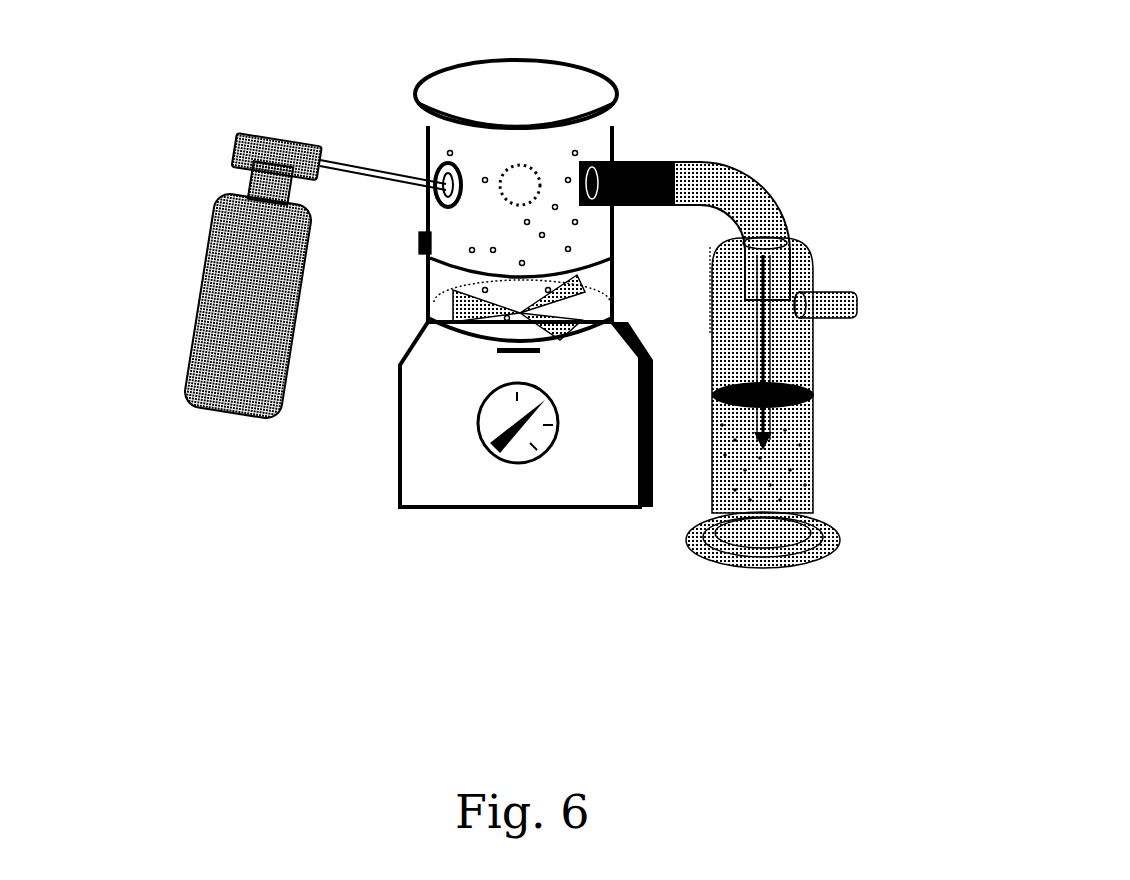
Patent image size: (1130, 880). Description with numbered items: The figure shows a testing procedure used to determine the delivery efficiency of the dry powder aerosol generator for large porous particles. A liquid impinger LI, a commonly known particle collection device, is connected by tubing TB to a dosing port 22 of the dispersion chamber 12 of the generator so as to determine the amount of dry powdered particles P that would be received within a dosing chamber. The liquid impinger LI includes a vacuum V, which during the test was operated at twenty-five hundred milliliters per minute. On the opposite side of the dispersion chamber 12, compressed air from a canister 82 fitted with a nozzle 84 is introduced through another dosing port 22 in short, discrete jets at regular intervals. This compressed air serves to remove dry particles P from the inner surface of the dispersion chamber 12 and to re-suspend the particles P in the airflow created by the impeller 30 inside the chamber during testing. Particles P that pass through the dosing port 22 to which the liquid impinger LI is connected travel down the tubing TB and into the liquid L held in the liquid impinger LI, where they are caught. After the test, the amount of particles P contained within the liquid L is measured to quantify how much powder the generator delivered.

The dispersion chamber 12 is at (613, 128).
The dosing port 22 is at (427, 160).
The impeller 30 is at (455, 322).
The canister 82 is at (200, 262).
The nozzle 84 is at (368, 167).
The dry powdered particles P is at (570, 250).
The tubing TB is at (747, 175).
The vacuum V is at (873, 305).
The liquid L is at (813, 392).
The liquid impinger LI is at (813, 420).